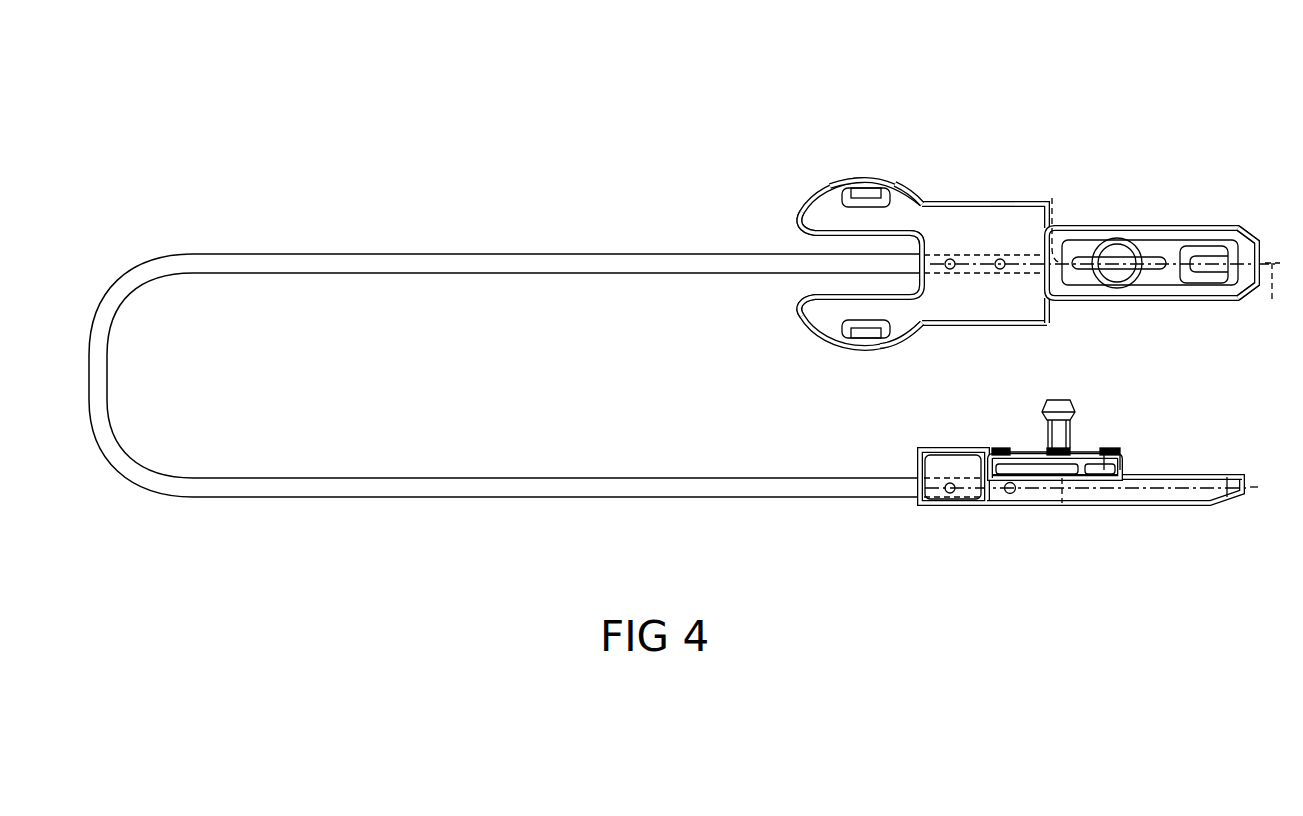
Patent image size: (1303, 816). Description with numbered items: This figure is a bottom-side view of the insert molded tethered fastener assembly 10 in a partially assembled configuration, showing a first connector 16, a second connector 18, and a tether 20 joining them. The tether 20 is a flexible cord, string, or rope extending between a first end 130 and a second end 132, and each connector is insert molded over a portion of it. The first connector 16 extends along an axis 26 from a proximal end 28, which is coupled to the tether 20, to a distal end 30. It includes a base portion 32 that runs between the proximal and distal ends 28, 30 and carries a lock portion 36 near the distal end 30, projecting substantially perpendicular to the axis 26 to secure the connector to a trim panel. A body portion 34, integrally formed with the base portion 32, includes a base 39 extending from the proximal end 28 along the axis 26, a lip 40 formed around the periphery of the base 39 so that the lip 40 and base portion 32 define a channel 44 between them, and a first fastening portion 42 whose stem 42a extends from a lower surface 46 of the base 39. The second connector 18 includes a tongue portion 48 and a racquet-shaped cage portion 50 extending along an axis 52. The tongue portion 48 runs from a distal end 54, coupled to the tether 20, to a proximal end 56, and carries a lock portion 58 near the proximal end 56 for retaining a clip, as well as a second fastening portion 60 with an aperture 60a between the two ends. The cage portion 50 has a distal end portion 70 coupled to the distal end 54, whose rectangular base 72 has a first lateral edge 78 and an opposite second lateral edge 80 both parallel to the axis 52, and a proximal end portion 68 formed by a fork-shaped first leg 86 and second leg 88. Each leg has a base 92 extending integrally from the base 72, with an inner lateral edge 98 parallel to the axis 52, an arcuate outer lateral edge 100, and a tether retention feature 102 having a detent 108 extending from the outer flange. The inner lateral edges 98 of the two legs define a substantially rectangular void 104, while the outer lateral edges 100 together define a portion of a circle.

The tethered fastener assembly 10 is at (1060, 124).
The first connector 16 is at (1075, 482).
The second connector 18 is at (1002, 250).
The tether 20 is at (144, 510).
The axis 26 is at (1254, 488).
The proximal end 28 is at (919, 467).
The distal end 30 is at (1241, 483).
The base portion 32 is at (1160, 498).
The body portion 34 is at (1022, 444).
The lock portion 36 is at (1185, 476).
The base 39 is at (1038, 468).
The lip 40 is at (1118, 455).
The first fastening portion 42 is at (1068, 405).
The stem 42a is at (1073, 435).
The channel 44 is at (1114, 470).
The lower surface 46 is at (1092, 453).
The tongue portion 48 is at (1201, 223).
The cage portion 50 is at (922, 179).
The axis 52 is at (1270, 305).
The distal end 54 is at (1052, 305).
The proximal end 56 is at (1262, 288).
The lock portion 58 is at (1202, 277).
The second fastening portion 60 is at (1135, 231).
The aperture 60a is at (1125, 281).
The proximal end portion 68 is at (839, 172).
The distal end portion 70 is at (979, 199).
The base 72 is at (1003, 232).
The first lateral edge 78 is at (1001, 203).
The second lateral edge 80 is at (1015, 326).
The first leg 86 is at (808, 193).
The second leg 88 is at (814, 340).
The base 92 is at (909, 215).
The inner lateral edge 98 is at (840, 292).
The outer lateral edge 100 is at (810, 210).
The tether retention feature 102 is at (865, 338).
The void 104 is at (888, 284).
The detent 108 is at (865, 197).
The first end 130 is at (1068, 498).
The second end 132 is at (1052, 198).